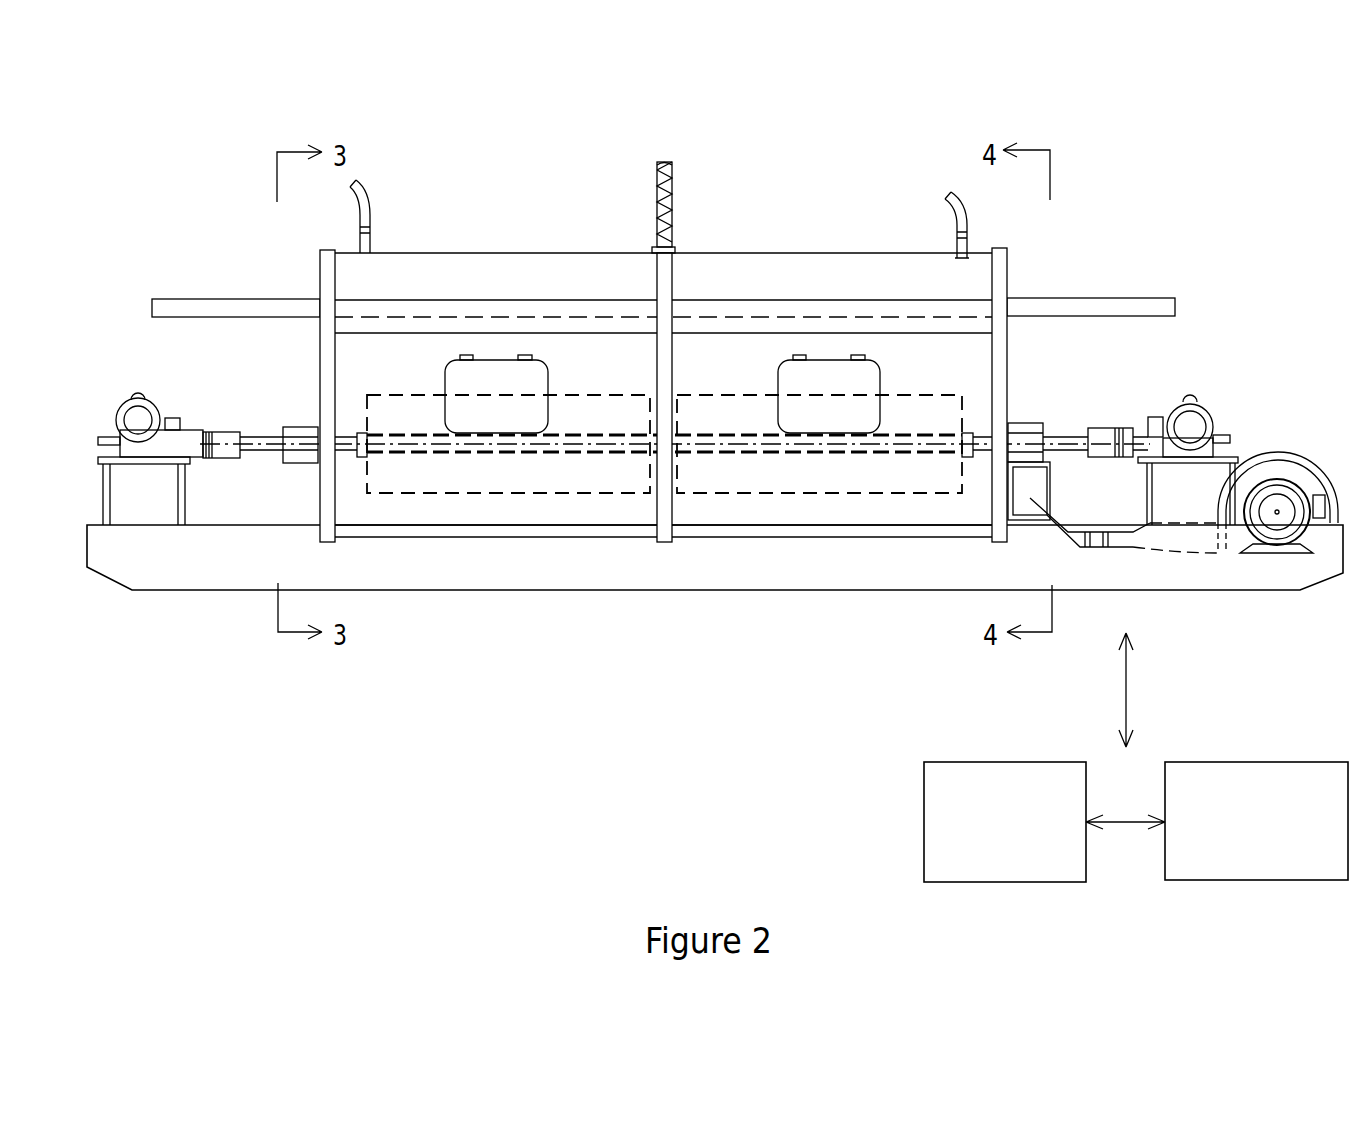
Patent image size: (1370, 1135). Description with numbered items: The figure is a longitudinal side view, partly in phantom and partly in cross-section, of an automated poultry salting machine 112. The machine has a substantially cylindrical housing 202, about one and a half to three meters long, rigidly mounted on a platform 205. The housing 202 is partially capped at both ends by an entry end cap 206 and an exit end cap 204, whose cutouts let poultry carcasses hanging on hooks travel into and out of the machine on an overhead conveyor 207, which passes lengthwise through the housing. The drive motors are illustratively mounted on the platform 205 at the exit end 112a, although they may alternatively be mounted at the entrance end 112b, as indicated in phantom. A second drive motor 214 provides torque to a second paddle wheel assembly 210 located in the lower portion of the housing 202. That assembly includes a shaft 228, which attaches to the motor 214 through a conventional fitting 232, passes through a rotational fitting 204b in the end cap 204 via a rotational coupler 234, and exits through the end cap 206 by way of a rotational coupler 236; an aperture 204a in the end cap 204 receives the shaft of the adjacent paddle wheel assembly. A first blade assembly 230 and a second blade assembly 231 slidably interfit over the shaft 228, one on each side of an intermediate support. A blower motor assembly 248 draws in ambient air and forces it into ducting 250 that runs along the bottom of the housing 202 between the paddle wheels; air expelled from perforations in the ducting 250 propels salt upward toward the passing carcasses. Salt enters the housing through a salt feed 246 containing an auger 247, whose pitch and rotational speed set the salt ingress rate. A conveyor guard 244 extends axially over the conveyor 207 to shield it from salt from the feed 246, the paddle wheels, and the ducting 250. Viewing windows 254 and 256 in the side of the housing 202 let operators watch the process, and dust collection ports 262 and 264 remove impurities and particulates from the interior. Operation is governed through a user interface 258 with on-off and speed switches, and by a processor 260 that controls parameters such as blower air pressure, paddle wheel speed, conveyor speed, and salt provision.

The automated poultry salting machine 112 is at (1295, 62).
The exit end 112a is at (177, 196).
The entrance end 112b is at (1252, 198).
The housing 202 is at (845, 152).
The exit end cap 204 is at (318, 273).
The aperture in end cap 204a is at (333, 300).
The rotational fitting in end cap 204b is at (338, 418).
The platform 205 is at (112, 572).
The entry end cap 206 is at (1008, 272).
The overhead conveyor 207 is at (1128, 298).
The second paddle wheel assembly 210 is at (517, 522).
The second drive motor 214 is at (158, 407).
The shaft 228 is at (267, 455).
The first blade assembly 230 is at (617, 495).
The second blade assembly 231 is at (823, 495).
The fitting 232 is at (223, 430).
The rotational coupler 234 is at (310, 425).
The rotational coupler 236 is at (1025, 423).
The conveyor guard 244 is at (715, 332).
The salt feed 246 is at (656, 205).
The auger 247 is at (675, 190).
The blower motor assembly 248 is at (1300, 480).
The ducting 250 is at (1067, 535).
The viewing window 254 is at (550, 375).
The viewing window 256 is at (870, 377).
The user interface 258 is at (1005, 822).
The processor 260 is at (1256, 821).
The dust collection port 262 is at (368, 212).
The dust collection port 264 is at (952, 208).